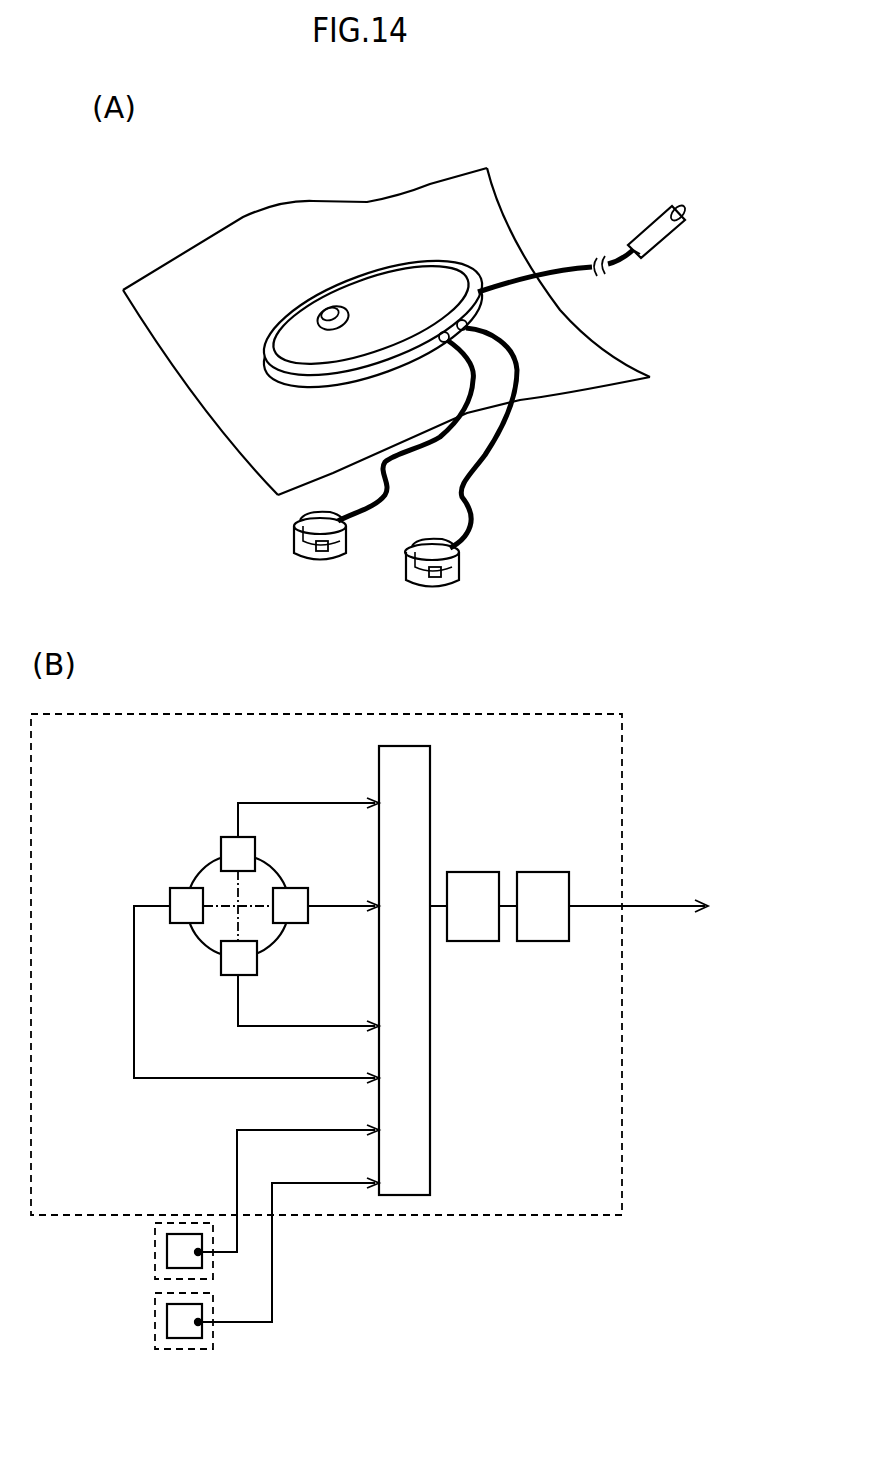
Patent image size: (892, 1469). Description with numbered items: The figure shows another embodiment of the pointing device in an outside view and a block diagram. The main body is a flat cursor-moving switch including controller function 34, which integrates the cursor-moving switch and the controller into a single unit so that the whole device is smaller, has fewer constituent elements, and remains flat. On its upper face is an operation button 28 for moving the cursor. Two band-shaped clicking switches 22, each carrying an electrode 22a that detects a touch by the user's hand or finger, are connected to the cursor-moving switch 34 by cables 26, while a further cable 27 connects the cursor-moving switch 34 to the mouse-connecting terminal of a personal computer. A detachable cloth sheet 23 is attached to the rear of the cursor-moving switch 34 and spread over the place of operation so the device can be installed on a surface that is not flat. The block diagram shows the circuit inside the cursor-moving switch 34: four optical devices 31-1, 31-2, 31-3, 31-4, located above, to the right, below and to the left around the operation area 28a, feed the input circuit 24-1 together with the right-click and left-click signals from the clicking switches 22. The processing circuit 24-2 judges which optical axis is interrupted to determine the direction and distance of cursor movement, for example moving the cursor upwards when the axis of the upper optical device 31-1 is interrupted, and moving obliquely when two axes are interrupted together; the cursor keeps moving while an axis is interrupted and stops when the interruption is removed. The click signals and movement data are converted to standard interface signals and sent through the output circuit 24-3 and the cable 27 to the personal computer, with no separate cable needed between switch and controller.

The detachable cloth sheet 23 is at (243, 240).
The cursor-moving switch including controller function 34 is at (400, 280).
The operation button 28 is at (326, 316).
The cable 27 is at (557, 255).
The cable 26 is at (470, 433).
The band-shaped clicking switch 22 is at (410, 568).
The electrode 22a is at (328, 548).
The direction detector 28a is at (210, 886).
The optical device 31-1 is at (228, 845).
The optical device 31-2 is at (300, 898).
The optical device 31-3 is at (240, 958).
The optical device 31-4 is at (185, 908).
The input circuit 24-1 is at (413, 808).
The processing circuit 24-2 is at (480, 872).
The output circuit 24-3 is at (552, 872).